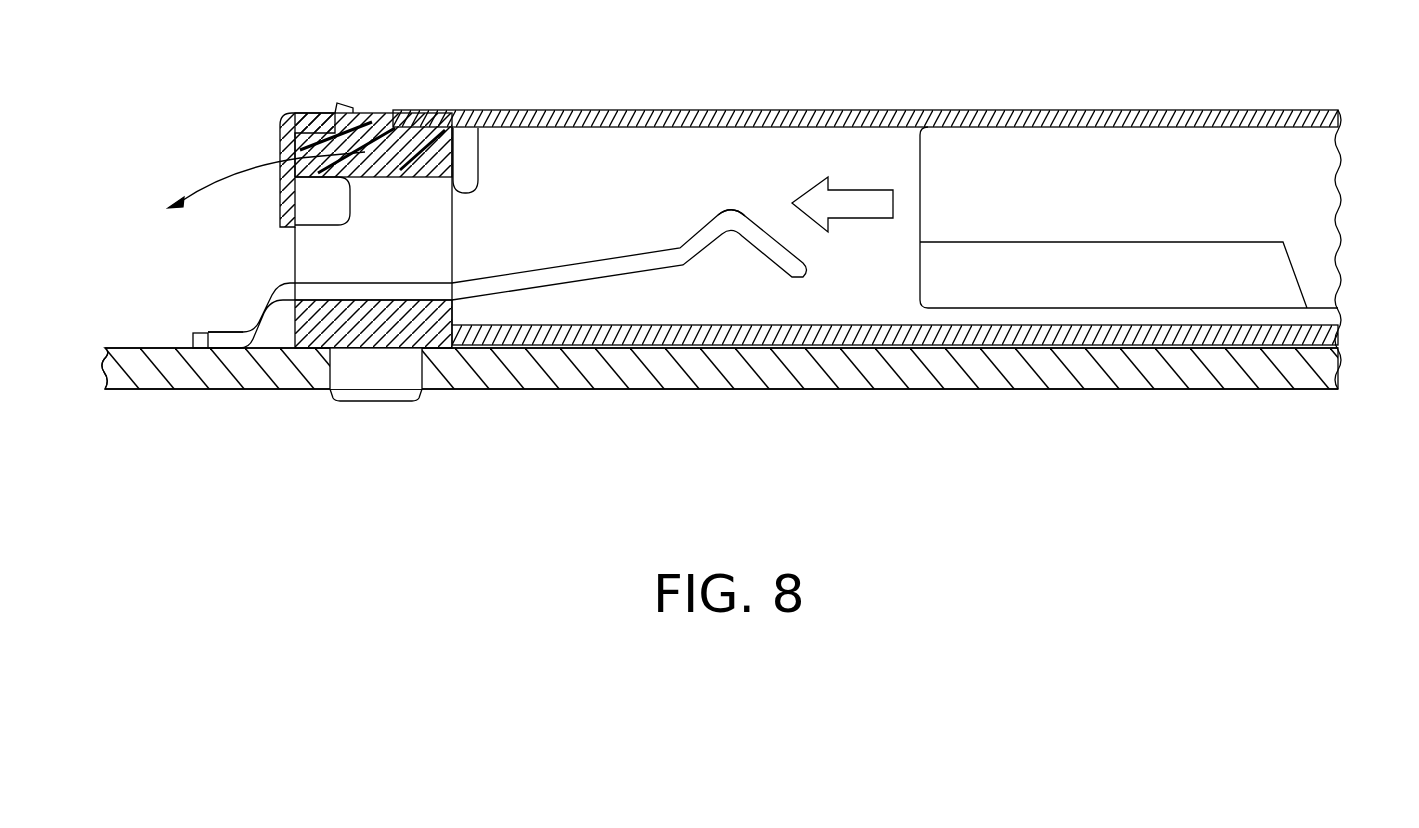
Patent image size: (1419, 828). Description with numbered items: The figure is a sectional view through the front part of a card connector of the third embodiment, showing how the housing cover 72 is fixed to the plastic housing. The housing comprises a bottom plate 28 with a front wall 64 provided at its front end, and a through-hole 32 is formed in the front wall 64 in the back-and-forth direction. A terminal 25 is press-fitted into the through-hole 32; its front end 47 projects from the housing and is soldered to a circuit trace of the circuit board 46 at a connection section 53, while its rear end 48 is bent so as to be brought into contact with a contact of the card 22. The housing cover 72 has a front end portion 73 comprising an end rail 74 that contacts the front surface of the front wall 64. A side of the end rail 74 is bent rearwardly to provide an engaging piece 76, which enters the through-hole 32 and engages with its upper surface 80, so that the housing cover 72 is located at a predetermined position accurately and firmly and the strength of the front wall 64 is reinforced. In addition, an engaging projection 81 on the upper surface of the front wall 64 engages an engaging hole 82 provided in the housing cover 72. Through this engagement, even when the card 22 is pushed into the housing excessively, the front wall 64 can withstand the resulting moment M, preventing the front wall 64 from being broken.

The card 22 is at (1310, 195).
The terminal 25 is at (577, 282).
The bottom plate 28 is at (1023, 345).
The through-hole 32 is at (433, 228).
The circuit board 46 is at (846, 362).
The front end 47 is at (222, 332).
The rear end 48 is at (735, 216).
The connection section 53 is at (205, 333).
The front wall 64 is at (380, 350).
The housing cover 72 is at (1058, 108).
The front end portion 73 is at (286, 119).
The end rail 74 is at (283, 200).
The engaging piece 76 is at (318, 220).
The upper surface 80 is at (478, 188).
The engaging projection 81 is at (346, 104).
The engaging hole 82 is at (395, 113).
The moment M is at (266, 175).